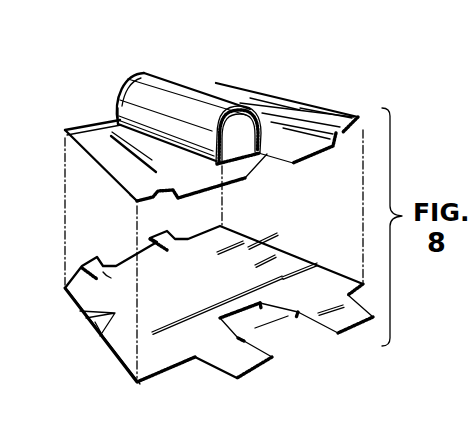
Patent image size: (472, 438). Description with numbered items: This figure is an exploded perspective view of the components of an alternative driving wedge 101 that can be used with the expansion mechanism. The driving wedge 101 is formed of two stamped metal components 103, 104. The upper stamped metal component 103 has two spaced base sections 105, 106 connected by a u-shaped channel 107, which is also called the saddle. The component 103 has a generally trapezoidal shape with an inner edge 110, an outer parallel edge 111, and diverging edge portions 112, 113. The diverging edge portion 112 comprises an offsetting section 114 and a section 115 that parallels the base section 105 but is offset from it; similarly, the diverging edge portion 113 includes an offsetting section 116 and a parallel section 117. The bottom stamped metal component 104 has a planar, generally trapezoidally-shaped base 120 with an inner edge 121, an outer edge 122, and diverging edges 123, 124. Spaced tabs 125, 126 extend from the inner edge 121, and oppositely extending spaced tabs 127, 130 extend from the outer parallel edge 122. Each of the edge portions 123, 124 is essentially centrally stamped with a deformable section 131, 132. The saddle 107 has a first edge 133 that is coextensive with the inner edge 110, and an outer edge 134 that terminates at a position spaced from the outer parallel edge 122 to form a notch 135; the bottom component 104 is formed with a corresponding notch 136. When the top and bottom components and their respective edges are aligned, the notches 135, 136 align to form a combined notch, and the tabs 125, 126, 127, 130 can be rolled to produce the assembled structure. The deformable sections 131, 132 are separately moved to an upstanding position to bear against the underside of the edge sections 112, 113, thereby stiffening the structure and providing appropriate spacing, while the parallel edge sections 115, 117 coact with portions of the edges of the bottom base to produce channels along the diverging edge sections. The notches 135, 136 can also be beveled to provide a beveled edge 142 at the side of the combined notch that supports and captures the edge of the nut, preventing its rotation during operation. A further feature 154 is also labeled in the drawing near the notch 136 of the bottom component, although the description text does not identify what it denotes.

The driving wedge 101 is at (406, 116).
The stamped metal component 103 is at (252, 82).
The bottom stamped metal component 104 is at (332, 240).
The base section 105 is at (130, 139).
The base section 106 is at (273, 124).
The u-shaped channel 107 is at (143, 72).
The inner edge 110 is at (117, 118).
The outer parallel edge 111 is at (366, 118).
The diverging edge portion 112 is at (86, 134).
The diverging edge portion 113 is at (258, 95).
The offsetting section 114 is at (147, 205).
The parallel section 115 is at (118, 178).
The offsetting section 116 is at (334, 142).
The parallel section 117 is at (331, 109).
The base 120 is at (80, 312).
The inner edge 121 is at (123, 264).
The outer edge 122 is at (177, 373).
The diverging edge 123 is at (118, 366).
The diverging edge 124 is at (352, 267).
The tab 125 is at (101, 267).
The tab 126 is at (167, 240).
The tab 127 is at (213, 373).
The tab 130 is at (349, 318).
The deformable section 131 is at (110, 327).
The deformable section 132 is at (287, 238).
The first edge 133 is at (117, 106).
The outer edge 134 is at (246, 109).
The notch 135 is at (258, 168).
The notch 136 is at (264, 316).
The beveled edge 142 is at (162, 228).
The slot 154 is at (252, 328).